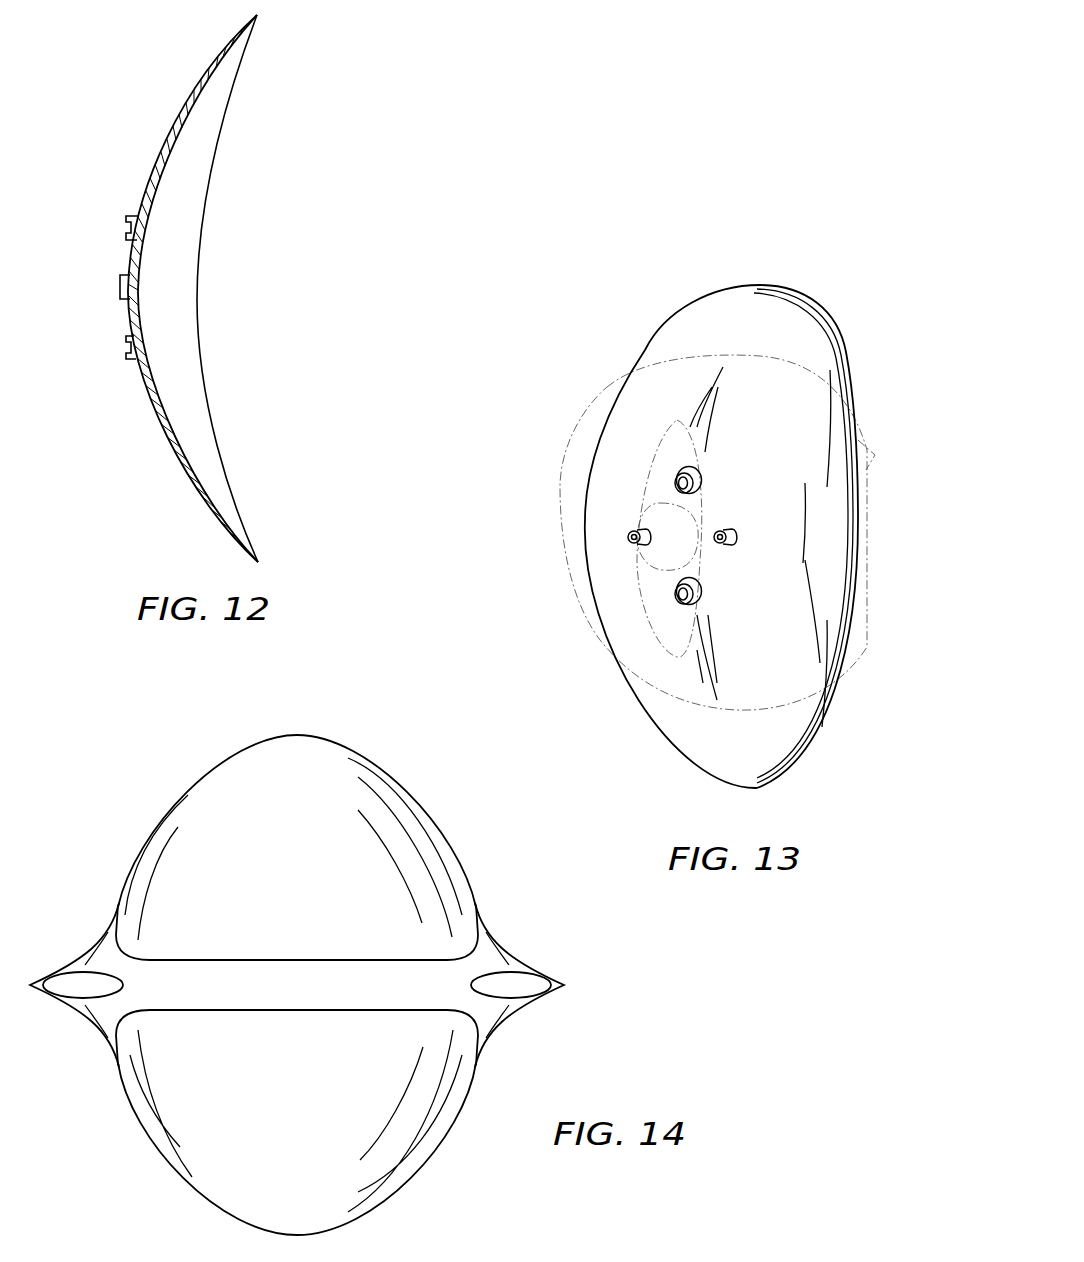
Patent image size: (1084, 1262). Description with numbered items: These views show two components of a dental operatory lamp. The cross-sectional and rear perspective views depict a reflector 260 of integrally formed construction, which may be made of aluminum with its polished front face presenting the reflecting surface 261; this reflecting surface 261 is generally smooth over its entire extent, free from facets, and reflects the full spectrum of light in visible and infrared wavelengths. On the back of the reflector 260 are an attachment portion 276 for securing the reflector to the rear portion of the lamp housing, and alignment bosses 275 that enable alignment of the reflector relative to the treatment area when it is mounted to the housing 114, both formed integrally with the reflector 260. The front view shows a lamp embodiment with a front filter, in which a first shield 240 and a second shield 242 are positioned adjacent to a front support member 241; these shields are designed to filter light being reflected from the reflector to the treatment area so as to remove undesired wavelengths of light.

In FIG. 13, the housing 114 is at (598, 405).
In FIG. 14, the first shield 240 is at (420, 798).
In FIG. 14, the front support member 241 is at (313, 960).
In FIG. 14, the second shield 242 is at (172, 1172).
In FIG. 12, the reflector 260 is at (222, 263).
In FIG. 13, the reflector 260 is at (690, 316).
In FIG. 12, the reflecting surface 261 is at (172, 333).
In FIG. 12, the alignment bosses 275 is at (126, 230).
In FIG. 13, the alignment bosses 275 is at (676, 482).
In FIG. 12, the attachment portion 276 is at (120, 289).
In FIG. 13, the attachment portion 276 is at (628, 537).